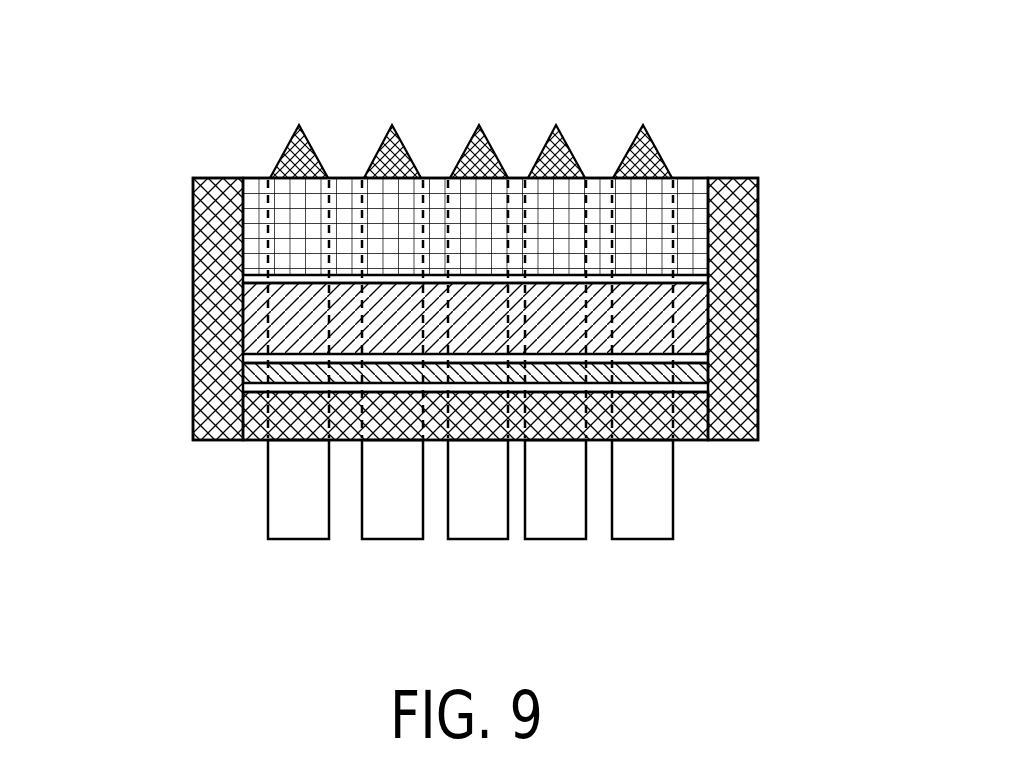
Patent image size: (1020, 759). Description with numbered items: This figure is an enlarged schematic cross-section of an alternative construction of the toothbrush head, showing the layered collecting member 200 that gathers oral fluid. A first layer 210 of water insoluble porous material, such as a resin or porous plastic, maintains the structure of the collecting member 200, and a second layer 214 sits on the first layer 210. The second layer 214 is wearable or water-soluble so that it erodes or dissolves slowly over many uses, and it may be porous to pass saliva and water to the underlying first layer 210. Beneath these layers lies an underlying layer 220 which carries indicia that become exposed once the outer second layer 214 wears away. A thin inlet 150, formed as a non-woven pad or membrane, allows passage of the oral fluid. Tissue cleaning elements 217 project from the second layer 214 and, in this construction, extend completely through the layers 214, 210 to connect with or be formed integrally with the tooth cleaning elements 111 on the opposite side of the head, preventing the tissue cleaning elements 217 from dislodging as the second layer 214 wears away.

The collecting member 200 is at (332, 103).
The tissue cleaning elements 217 is at (567, 147).
The second layer 214 is at (270, 235).
The underlying layer 220 is at (710, 278).
The first layer 210 is at (280, 323).
The inlet 150 is at (262, 357).
The tooth cleaning elements 111 is at (280, 520).